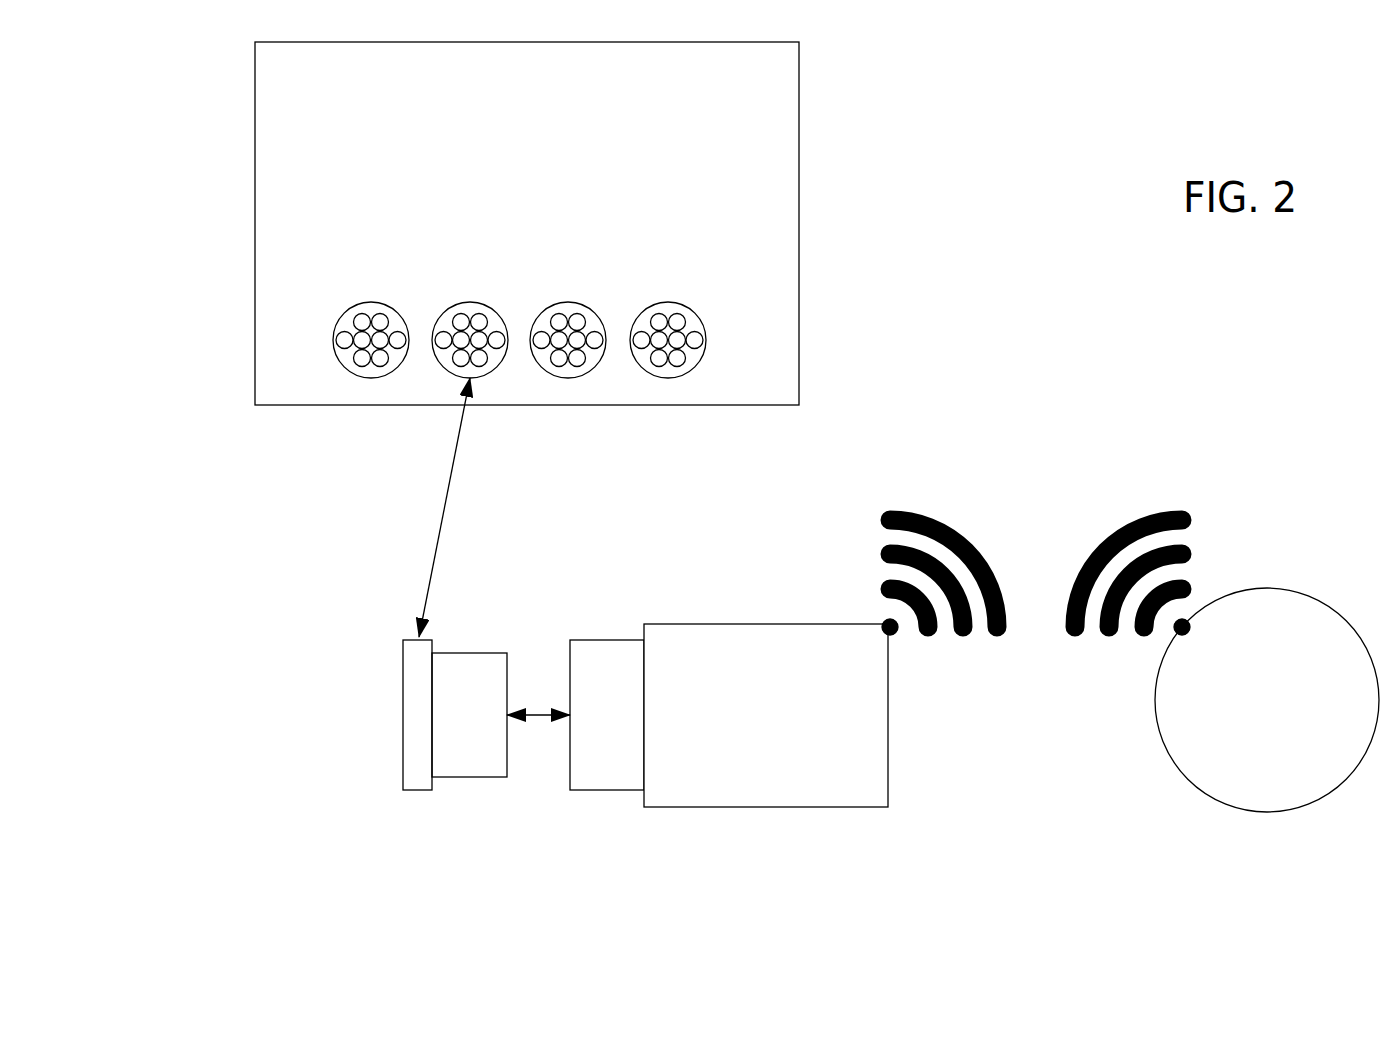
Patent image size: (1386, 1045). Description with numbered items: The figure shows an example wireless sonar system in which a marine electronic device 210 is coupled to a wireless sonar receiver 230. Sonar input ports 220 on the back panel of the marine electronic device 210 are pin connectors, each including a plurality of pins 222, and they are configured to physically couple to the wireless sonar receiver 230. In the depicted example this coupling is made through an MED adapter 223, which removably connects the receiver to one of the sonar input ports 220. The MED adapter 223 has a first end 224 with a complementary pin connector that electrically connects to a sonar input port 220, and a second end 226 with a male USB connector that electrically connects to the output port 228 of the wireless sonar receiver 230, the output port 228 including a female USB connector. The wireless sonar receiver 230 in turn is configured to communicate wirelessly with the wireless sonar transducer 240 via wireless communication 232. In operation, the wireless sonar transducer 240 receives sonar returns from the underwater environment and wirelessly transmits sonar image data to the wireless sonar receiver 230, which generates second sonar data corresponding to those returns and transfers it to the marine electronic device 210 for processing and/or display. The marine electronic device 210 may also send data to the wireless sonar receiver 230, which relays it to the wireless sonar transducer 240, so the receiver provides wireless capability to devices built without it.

The marine electronic device 210 is at (799, 222).
The sonar input ports 220 is at (667, 302).
The pins 222 is at (364, 362).
The MED adapter 223 is at (433, 639).
The first end 224 is at (403, 713).
The second end 226 is at (467, 777).
The output port 228 is at (607, 640).
The wireless sonar receiver 230 is at (765, 808).
The wireless communication 232 is at (1120, 528).
The wireless sonar transducer 240 is at (1268, 812).